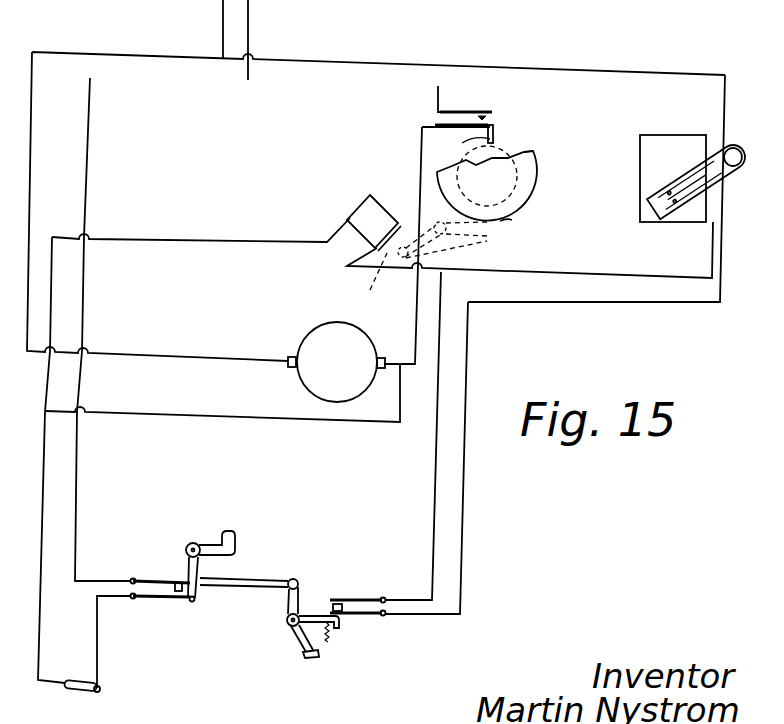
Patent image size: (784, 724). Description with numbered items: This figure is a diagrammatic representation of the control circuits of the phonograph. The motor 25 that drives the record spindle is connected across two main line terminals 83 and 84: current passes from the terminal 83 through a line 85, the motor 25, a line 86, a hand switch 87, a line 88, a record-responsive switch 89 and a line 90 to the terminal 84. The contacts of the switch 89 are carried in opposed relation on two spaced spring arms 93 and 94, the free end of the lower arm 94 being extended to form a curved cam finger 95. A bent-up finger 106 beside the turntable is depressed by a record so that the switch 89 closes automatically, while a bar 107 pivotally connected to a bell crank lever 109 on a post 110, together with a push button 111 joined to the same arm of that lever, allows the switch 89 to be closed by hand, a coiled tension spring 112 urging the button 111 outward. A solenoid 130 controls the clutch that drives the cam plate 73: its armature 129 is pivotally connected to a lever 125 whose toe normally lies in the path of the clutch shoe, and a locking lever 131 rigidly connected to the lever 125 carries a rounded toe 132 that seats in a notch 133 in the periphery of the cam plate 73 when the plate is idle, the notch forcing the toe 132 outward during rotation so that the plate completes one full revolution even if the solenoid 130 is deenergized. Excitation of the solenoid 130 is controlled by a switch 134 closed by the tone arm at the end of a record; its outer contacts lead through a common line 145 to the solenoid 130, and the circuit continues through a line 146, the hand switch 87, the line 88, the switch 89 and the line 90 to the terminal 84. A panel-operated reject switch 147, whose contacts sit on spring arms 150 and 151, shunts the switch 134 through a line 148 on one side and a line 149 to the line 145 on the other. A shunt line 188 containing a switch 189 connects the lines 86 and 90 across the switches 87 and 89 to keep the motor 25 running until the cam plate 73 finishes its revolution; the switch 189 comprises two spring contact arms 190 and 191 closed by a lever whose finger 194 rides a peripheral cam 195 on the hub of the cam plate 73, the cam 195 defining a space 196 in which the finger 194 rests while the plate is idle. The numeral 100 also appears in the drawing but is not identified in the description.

The motor 25 is at (313, 334).
The cam plate 73 is at (541, 170).
The main line terminal 83 is at (221, 23).
The main line terminal 84 is at (252, 26).
The line 85 is at (30, 130).
The line 86 is at (345, 425).
The hand switch 87 is at (83, 692).
The line 88 is at (98, 653).
The switch 89 is at (158, 578).
The line 90 is at (78, 462).
The spring arm 93 is at (177, 582).
The spring arm 94 is at (171, 600).
The curved cam finger 95 is at (191, 603).
The conductor 100 is at (727, 106).
The finger 106 is at (240, 537).
The bar 107 is at (263, 578).
The bell crank lever 109 is at (302, 600).
The post 110 is at (289, 624).
The push button 111 is at (308, 660).
The coiled tension spring 112 is at (332, 642).
The lever 125 is at (425, 251).
The armature 129 is at (370, 275).
The solenoid 130 is at (362, 204).
The locking lever 131 is at (472, 246).
The rounded toe 132 is at (500, 240).
The notch 133 is at (508, 219).
The switch 134 is at (672, 198).
The common line 145 is at (662, 272).
The line 146 is at (243, 241).
The switch 147 is at (342, 602).
The line 148 is at (466, 528).
The line 149 is at (438, 432).
The spring arm 150 is at (367, 618).
The spring arm 151 is at (370, 598).
The shunt line 188 is at (418, 138).
The switch 189 is at (494, 125).
The spring contact arm 190 is at (477, 110).
The spring contact arm 191 is at (460, 124).
The finger 194 is at (496, 140).
The peripheral cam 195 is at (535, 151).
The space 196 is at (463, 147).